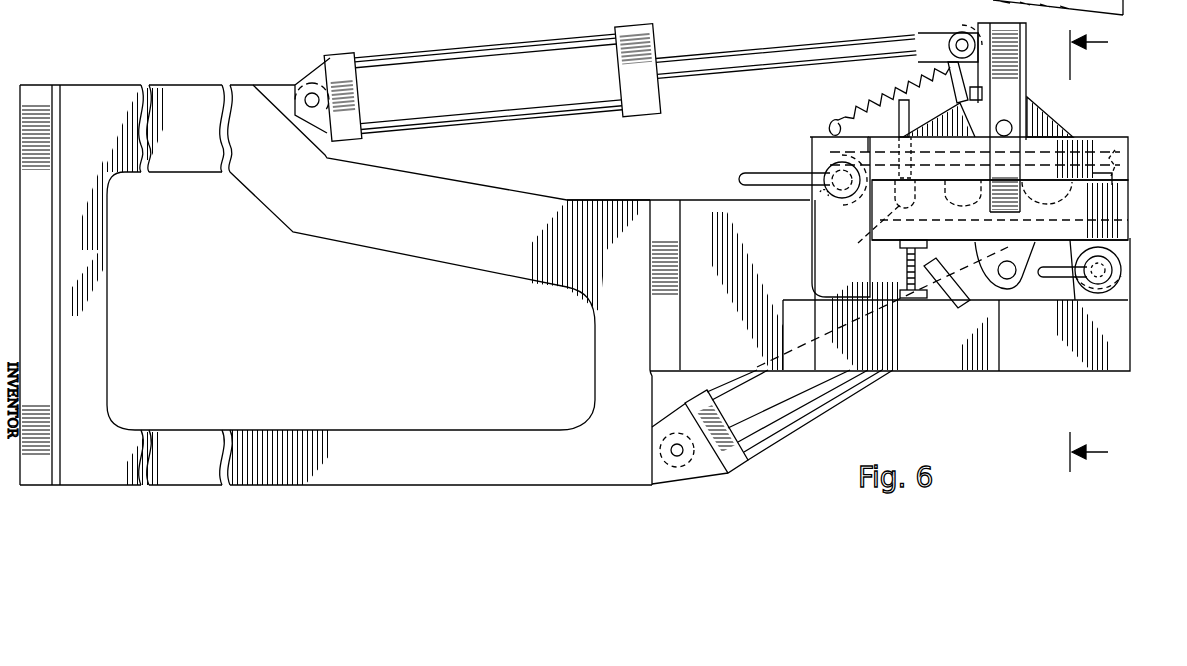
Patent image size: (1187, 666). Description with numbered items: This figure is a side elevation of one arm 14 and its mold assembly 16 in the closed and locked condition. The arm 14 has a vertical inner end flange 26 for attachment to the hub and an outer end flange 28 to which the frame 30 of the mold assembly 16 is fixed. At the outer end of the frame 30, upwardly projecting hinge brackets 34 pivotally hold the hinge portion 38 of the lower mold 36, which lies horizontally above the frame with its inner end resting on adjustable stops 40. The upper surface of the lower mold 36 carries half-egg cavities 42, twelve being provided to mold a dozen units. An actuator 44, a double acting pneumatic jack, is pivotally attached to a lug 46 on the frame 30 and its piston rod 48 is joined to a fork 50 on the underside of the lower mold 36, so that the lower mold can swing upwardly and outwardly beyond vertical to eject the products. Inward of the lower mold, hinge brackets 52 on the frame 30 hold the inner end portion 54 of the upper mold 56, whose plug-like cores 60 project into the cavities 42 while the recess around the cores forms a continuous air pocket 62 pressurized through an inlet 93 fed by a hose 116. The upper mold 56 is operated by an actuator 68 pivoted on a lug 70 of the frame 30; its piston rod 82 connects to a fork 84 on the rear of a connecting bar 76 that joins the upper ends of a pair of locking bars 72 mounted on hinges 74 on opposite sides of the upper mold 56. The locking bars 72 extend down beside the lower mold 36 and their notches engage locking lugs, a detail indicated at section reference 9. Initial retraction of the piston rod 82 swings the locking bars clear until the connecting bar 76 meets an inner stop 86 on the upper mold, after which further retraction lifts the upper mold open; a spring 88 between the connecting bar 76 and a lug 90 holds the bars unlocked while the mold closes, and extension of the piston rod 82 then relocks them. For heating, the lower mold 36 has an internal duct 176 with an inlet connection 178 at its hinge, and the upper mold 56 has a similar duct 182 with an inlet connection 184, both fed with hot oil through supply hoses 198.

The arm 14 is at (108, 86).
The mold assembly 16 is at (1080, 377).
The inner end flange 26 is at (38, 80).
The outer end flange 28 is at (672, 198).
The frame 30 is at (974, 366).
The hinge brackets 34 is at (1125, 294).
The lower mold 36 is at (1122, 207).
The hinge portion 38 is at (1118, 245).
The adjustable stops 40 is at (907, 258).
The cavities 42 is at (1130, 184).
The actuator 44 is at (833, 393).
The lug 46 is at (680, 473).
The piston rod 48 is at (932, 266).
The fork 50 is at (985, 243).
The hinge brackets 52 is at (822, 172).
The inner end portion 54 is at (813, 140).
The upper mold 56 is at (1083, 135).
The cores 60 is at (870, 210).
The air pocket 62 is at (1120, 162).
The actuator 68 is at (560, 106).
The lug 70 is at (268, 88).
The locking bars 72 is at (1020, 135).
The hinges 74 is at (1008, 120).
The connecting bar 76 is at (1026, 42).
The piston rod 82 is at (738, 58).
The fork 84 is at (955, 33).
The inner stop 86 is at (962, 100).
The spring 88 is at (895, 85).
The lug 90 is at (828, 125).
The inlet 93 is at (899, 128).
The hose 116 is at (905, 128).
The internal duct 176 is at (866, 240).
The inlet connection 178 is at (1122, 272).
The internal duct 182 is at (1113, 152).
The inlet connection 184 is at (818, 197).
The supply hoses 198 is at (762, 172).
The section line 9- 9 is at (1097, 251).